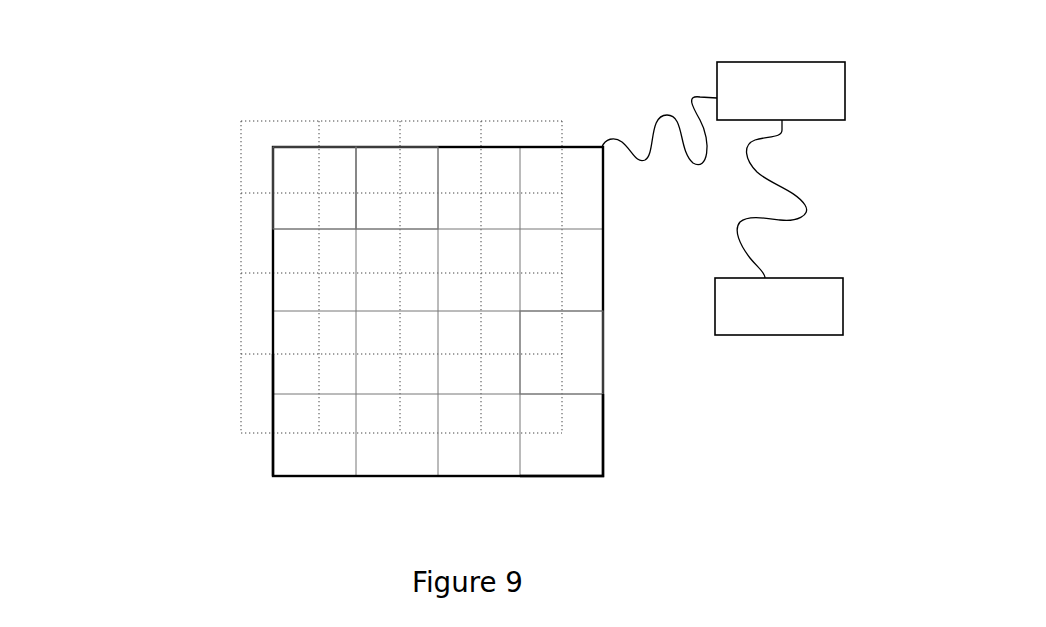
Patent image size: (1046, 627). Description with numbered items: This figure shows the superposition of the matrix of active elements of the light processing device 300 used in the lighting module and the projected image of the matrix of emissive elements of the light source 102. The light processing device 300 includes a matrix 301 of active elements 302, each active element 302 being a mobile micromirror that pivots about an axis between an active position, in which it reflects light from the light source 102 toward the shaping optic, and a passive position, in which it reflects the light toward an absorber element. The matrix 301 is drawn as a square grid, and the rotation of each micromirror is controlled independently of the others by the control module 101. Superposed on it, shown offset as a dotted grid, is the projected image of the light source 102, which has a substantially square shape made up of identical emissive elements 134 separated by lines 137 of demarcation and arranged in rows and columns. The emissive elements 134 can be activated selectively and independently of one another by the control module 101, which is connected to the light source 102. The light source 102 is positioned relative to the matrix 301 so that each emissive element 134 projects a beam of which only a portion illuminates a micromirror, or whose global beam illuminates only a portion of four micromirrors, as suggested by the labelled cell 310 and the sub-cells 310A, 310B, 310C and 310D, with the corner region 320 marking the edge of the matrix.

The light processing device 300 is at (338, 147).
The matrix of active elements 301 is at (287, 218).
The active element 302 is at (425, 228).
The emissive element 134 is at (252, 373).
The lines of demarcation 137 is at (300, 432).
The grid cell 310 is at (528, 378).
The grid corner 320 is at (545, 477).
The control module 101 is at (723, 113).
The light source 102 is at (779, 227).
The sub-cell A 310A is at (376, 251).
The sub-cell B 310B is at (420, 251).
The sub-cell C 310C is at (375, 295).
The sub-cell D 310D is at (421, 295).